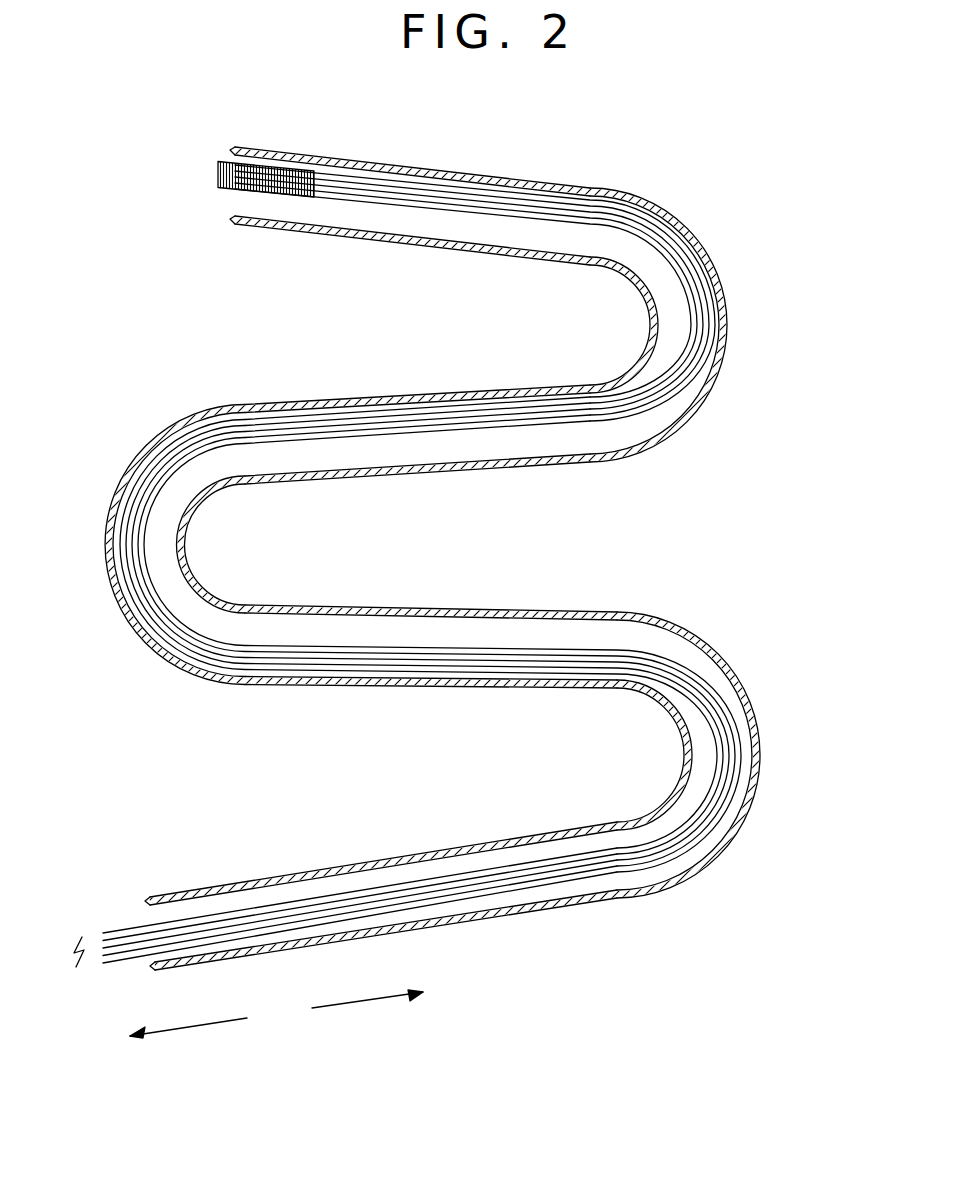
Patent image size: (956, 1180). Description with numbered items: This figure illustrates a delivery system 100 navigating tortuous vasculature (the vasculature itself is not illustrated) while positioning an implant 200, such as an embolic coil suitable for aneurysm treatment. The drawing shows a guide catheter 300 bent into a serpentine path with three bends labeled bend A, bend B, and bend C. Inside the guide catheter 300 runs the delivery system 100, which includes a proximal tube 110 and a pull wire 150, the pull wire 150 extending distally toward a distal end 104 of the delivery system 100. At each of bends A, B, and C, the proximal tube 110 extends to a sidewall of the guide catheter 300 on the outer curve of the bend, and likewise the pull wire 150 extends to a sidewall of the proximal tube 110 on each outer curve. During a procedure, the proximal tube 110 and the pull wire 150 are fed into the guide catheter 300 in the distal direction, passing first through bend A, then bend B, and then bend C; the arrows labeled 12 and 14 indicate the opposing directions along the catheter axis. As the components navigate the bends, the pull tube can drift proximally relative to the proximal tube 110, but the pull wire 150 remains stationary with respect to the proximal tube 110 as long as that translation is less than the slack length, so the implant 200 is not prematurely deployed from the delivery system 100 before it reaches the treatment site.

The proximal direction 12 is at (188, 1038).
The distal direction 14 is at (367, 1015).
The delivery system 100 is at (407, 566).
The distal end of the delivery system 104 is at (305, 196).
The proximal tube 110 is at (505, 893).
The pull wire 150 is at (418, 418).
The implant 200 is at (297, 157).
The guide catheter 300 is at (433, 579).
The bend A is at (720, 755).
The bend B is at (144, 545).
The bend C is at (692, 325).